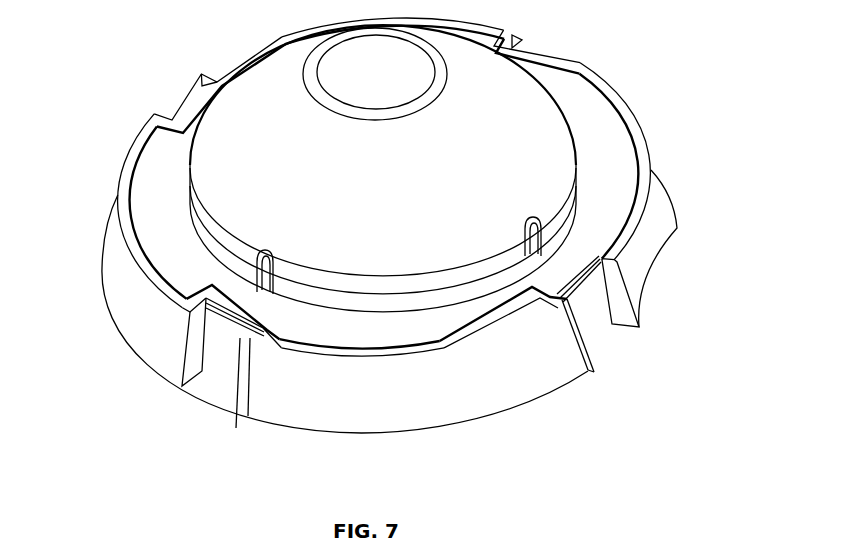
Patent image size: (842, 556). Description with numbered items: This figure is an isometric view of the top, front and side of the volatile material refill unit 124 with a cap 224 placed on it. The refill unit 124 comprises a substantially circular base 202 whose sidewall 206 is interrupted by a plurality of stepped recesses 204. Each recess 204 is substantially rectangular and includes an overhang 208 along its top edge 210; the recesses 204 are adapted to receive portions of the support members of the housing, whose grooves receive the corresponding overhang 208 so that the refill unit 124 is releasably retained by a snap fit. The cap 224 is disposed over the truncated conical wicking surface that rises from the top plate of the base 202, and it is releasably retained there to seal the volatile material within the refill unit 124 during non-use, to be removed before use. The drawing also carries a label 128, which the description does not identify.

The refill unit 124 is at (122, 38).
The base 128 is at (387, 435).
The base 202 is at (612, 143).
The stepped recesses 204 is at (188, 100).
The sidewall 206 is at (667, 225).
The overhang 208 is at (210, 318).
The top edge 210 is at (238, 400).
The cap 224 is at (540, 112).